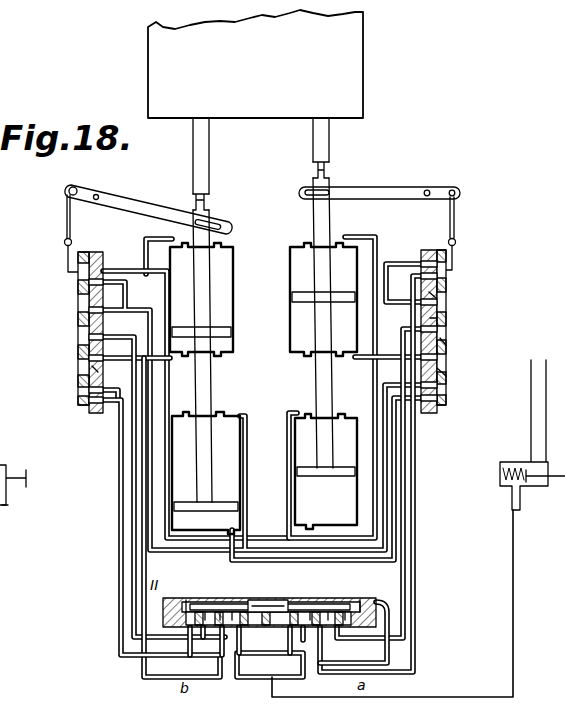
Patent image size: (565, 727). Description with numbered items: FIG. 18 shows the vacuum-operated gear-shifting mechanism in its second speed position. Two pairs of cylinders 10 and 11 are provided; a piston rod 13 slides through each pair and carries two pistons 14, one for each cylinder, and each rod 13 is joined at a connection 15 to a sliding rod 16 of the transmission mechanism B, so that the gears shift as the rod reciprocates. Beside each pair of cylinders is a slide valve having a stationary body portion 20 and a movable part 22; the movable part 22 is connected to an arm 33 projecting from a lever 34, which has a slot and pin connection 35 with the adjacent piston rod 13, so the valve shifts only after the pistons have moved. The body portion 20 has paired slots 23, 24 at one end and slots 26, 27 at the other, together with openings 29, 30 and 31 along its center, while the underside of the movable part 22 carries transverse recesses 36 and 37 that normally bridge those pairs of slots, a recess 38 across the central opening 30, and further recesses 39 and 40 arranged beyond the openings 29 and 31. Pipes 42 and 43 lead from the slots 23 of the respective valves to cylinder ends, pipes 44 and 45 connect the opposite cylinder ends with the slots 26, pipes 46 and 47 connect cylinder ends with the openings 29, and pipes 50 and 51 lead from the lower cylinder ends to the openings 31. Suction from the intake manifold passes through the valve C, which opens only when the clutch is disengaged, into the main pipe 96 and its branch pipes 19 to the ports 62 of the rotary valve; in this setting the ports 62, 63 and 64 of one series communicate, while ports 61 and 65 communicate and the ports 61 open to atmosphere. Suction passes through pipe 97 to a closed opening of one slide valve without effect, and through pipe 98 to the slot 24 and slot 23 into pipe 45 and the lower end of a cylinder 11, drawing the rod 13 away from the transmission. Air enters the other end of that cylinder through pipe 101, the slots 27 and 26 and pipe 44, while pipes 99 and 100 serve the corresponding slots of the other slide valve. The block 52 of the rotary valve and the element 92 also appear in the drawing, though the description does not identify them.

The transmission mechanism B is at (352, 82).
The pair of cylinders 10 is at (288, 340).
The pair of cylinders 11 is at (236, 321).
The piston rod 13 is at (211, 284).
The piston 14 is at (215, 330).
The connection 15 is at (205, 202).
The sliding rod or shaft 16 is at (205, 167).
The branch pipe 19 is at (303, 640).
The stationary body portion 20 is at (440, 412).
The sliding or movable part 22 is at (92, 410).
The slot 23 is at (436, 385).
The slot 24 is at (440, 374).
The slot 26 is at (446, 256).
The slot 27 is at (448, 268).
The opening 29 is at (432, 305).
The opening 30 is at (436, 328).
The opening 31 is at (442, 342).
The arm 33 is at (67, 224).
The lever 34 is at (150, 200).
The slot and pin connection 35 is at (222, 230).
The transverse recess 36 is at (446, 278).
The transverse recess 37 is at (436, 397).
The recess 38 is at (432, 330).
The recess 39 is at (432, 356).
The recess 40 is at (440, 296).
The pipe 42 is at (405, 518).
The pipe 43 is at (148, 424).
The pipe 44 is at (378, 462).
The pipe 45 is at (168, 392).
The pipe 46 is at (378, 239).
The pipe 47 is at (146, 250).
The pipe 50 is at (383, 345).
The pipe 51 is at (151, 358).
The distributing valve 52 is at (168, 618).
The port 61 is at (250, 612).
The port 62 is at (232, 610).
The port 63 is at (220, 610).
The port 64 is at (205, 612).
The port 65 is at (186, 610).
The controller 92 is at (8, 511).
The main pipe 96 is at (514, 614).
The pipe 97 is at (142, 452).
The pipe 98 is at (390, 610).
The pipe 99 is at (133, 490).
The pipe 100 is at (121, 540).
The pipe 101 is at (416, 578).
The valve C is at (282, 435).